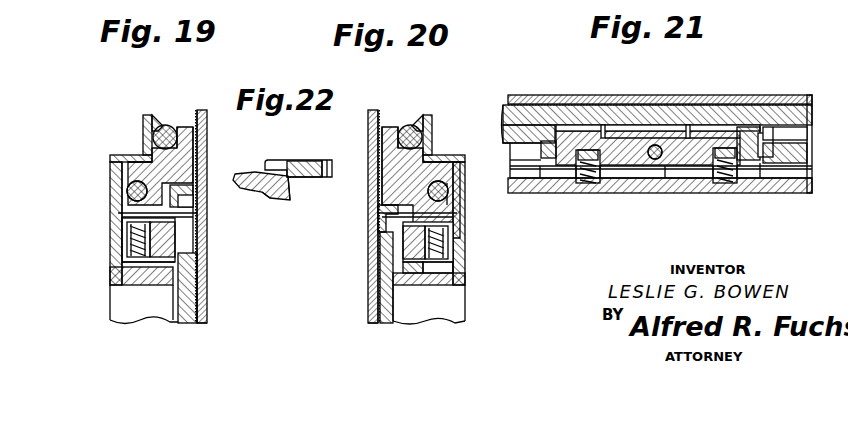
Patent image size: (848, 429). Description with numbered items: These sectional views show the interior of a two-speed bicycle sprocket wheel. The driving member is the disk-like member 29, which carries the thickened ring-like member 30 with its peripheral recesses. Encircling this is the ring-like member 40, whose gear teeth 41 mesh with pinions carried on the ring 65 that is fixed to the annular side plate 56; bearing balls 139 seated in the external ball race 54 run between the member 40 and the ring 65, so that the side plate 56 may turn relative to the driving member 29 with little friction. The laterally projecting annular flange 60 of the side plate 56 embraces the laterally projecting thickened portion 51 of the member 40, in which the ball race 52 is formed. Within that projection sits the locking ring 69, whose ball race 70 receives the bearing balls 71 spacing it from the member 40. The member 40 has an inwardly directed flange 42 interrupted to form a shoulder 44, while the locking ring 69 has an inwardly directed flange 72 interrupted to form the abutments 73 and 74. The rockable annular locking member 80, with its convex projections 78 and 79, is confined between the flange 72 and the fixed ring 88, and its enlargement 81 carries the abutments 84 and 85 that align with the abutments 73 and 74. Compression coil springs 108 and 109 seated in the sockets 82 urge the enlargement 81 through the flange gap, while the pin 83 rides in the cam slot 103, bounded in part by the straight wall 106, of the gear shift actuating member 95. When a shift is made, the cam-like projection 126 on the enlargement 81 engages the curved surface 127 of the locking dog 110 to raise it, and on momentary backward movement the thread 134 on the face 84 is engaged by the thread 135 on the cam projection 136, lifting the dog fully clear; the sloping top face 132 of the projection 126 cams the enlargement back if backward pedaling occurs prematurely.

In FIG. 19, the disk-like member 29 is at (205, 225).
In FIG. 20, the disk-like member 29 is at (370, 200).
In FIG. 21, the disk-like member 29 is at (760, 98).
In FIG. 19, the ring-like member 30 is at (190, 262).
In FIG. 20, the ring-like member 30 is at (385, 255).
In FIG. 21, the ring-like member 30 is at (565, 118).
In FIG. 19, the ring-like member 40 is at (195, 150).
In FIG. 20, the ring-like member 40 is at (393, 165).
In FIG. 19, the gear teeth 41 is at (182, 128).
In FIG. 20, the gear teeth 41 is at (395, 128).
In FIG. 20, the inwardly directed flange 42 is at (385, 222).
In FIG. 21, the inwardly directed flange 42 is at (512, 125).
In FIG. 21, the shoulder 44 is at (545, 160).
In FIG. 19, the thickened portion 51 is at (133, 160).
In FIG. 20, the thickened portion 51 is at (445, 168).
In FIG. 19, the ball race 52 is at (112, 166).
In FIG. 20, the ball race 52 is at (462, 168).
In FIG. 19, the external ball race 54 is at (190, 126).
In FIG. 20, the external ball race 54 is at (428, 150).
In FIG. 19, the annular side plate 56 is at (150, 118).
In FIG. 20, the annular side plate 56 is at (428, 120).
In FIG. 19, the annular flange 60 is at (147, 155).
In FIG. 20, the annular flange 60 is at (445, 160).
In FIG. 19, the ring 65 is at (163, 125).
In FIG. 20, the ring 65 is at (410, 120).
In FIG. 19, the locking ring 69 is at (130, 190).
In FIG. 20, the locking ring 69 is at (445, 195).
In FIG. 20, the ball race 70 is at (455, 192).
In FIG. 19, the bearing balls 71 is at (112, 180).
In FIG. 20, the bearing balls 71 is at (462, 180).
In FIG. 21, the inwardly directed flange 72 is at (530, 147).
In FIG. 21, the abutment 73 is at (770, 160).
In FIG. 21, the abutment 74 is at (545, 166).
In FIG. 20, the convex projection 78 is at (437, 215).
In FIG. 19, the convex projection 79 is at (150, 214).
In FIG. 21, the rockable annular locking member 80 is at (530, 166).
In FIG. 19, the enlargement 81 is at (115, 275).
In FIG. 20, the enlargement 81 is at (410, 268).
In FIG. 22, the enlargement 81 is at (265, 172).
In FIG. 21, the enlargement 81 is at (625, 192).
In FIG. 19, the sockets 82 is at (152, 238).
In FIG. 20, the sockets 82 is at (440, 253).
In FIG. 21, the pin 83 is at (658, 160).
In FIG. 22, the abutment 84 is at (288, 185).
In FIG. 21, the abutment 84 is at (745, 140).
In FIG. 21, the abutment 85 is at (580, 130).
In FIG. 19, the fixed ring 88 is at (122, 222).
In FIG. 20, the fixed ring 88 is at (445, 230).
In FIG. 19, the gear shift actuating member 95 is at (197, 287).
In FIG. 20, the gear shift actuating member 95 is at (380, 300).
In FIG. 20, the cam slot 103 is at (435, 277).
In FIG. 20, the straight wall 106 is at (445, 287).
In FIG. 19, the compression coil spring 108 is at (135, 243).
In FIG. 20, the compression coil spring 108 is at (440, 240).
In FIG. 21, the compression coil spring 108 is at (725, 175).
In FIG. 21, the compression coil spring 109 is at (588, 175).
In FIG. 19, the locking dog 110 is at (185, 195).
In FIG. 21, the cam-like projection 126 is at (665, 120).
In FIG. 19, the curved surface 127 is at (188, 200).
In FIG. 21, the sloping top face 132 is at (688, 125).
In FIG. 22, the thread 134 is at (270, 198).
In FIG. 21, the thread 134 is at (765, 135).
In FIG. 22, the thread 135 is at (290, 162).
In FIG. 22, the cam projection 136 is at (300, 162).
In FIG. 21, the cam projection 136 is at (770, 130).
In FIG. 19, the bearing balls 139 is at (155, 125).
In FIG. 20, the bearing balls 139 is at (403, 125).